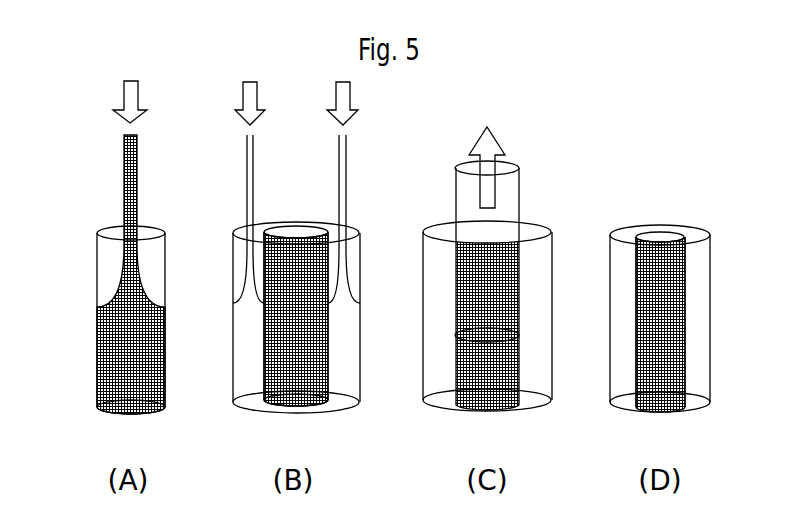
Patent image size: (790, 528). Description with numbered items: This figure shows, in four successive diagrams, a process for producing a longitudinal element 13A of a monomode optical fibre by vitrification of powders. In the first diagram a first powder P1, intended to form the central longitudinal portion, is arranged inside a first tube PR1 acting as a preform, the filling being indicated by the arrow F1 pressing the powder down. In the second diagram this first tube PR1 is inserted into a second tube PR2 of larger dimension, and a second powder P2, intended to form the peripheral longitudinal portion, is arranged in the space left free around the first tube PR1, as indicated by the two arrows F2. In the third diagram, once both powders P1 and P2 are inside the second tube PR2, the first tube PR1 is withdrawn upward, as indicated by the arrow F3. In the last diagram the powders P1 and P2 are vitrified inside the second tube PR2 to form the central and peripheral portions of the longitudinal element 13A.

The first pressing force F1 is at (130, 100).
The second pressing force F2 is at (250, 100).
The pull-out force F3 is at (470, 150).
The first powder P1 is at (129, 150).
The second powder P2 is at (248, 150).
The first tube PR1 is at (110, 255).
The second tube PR2 is at (242, 258).
The longitudinal element 13A is at (673, 212).